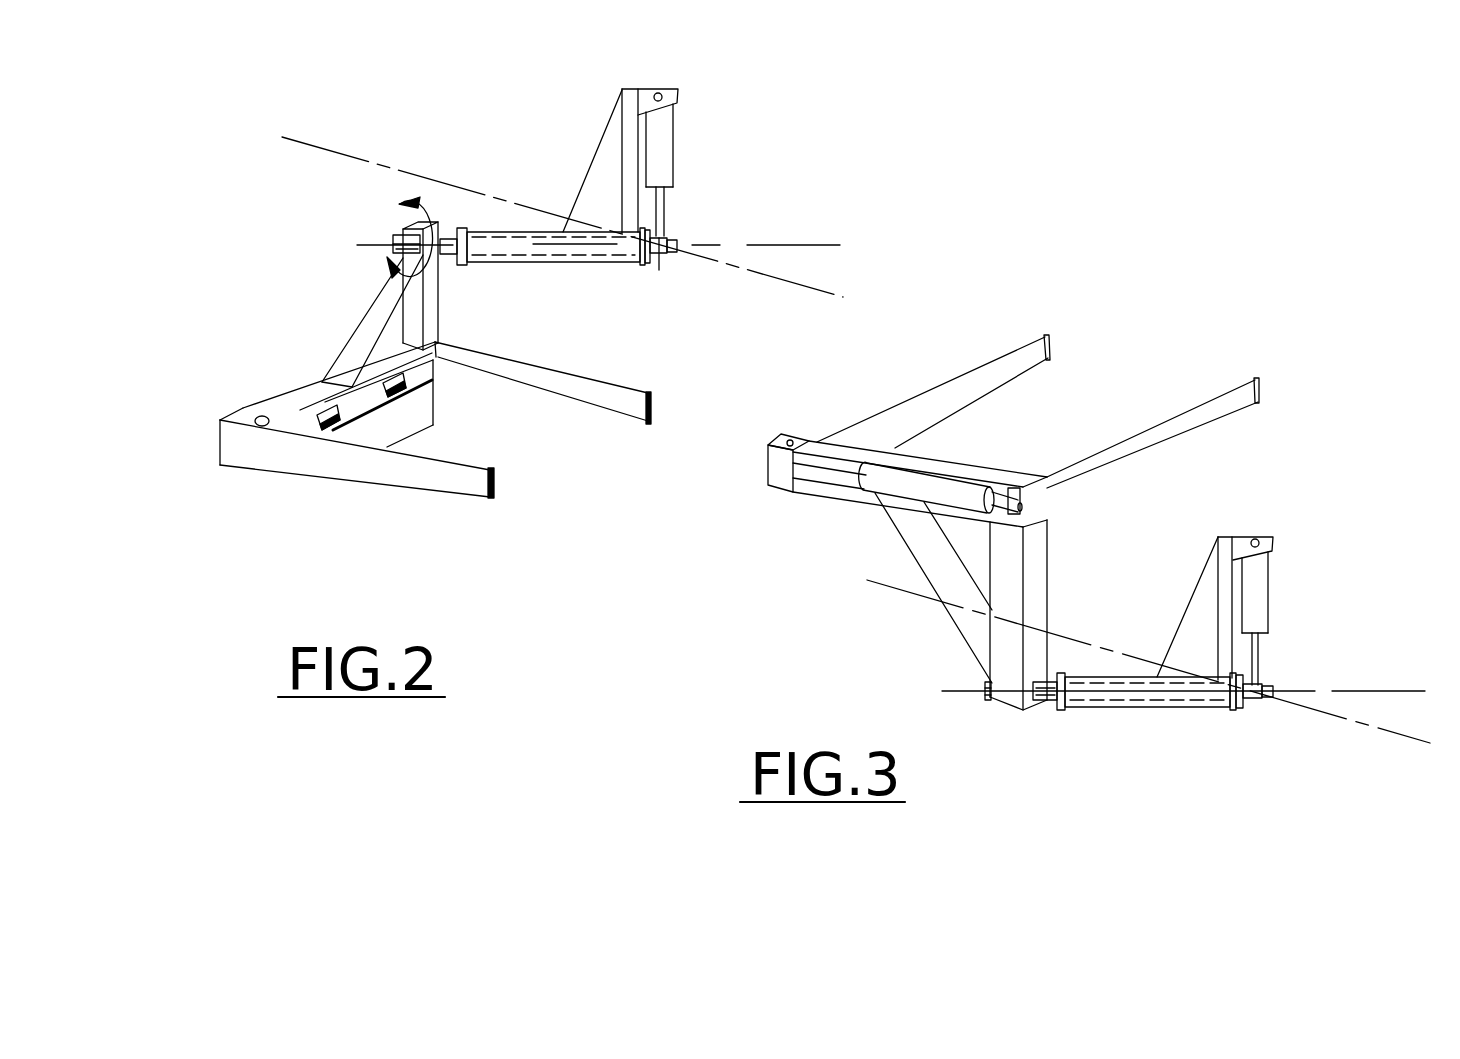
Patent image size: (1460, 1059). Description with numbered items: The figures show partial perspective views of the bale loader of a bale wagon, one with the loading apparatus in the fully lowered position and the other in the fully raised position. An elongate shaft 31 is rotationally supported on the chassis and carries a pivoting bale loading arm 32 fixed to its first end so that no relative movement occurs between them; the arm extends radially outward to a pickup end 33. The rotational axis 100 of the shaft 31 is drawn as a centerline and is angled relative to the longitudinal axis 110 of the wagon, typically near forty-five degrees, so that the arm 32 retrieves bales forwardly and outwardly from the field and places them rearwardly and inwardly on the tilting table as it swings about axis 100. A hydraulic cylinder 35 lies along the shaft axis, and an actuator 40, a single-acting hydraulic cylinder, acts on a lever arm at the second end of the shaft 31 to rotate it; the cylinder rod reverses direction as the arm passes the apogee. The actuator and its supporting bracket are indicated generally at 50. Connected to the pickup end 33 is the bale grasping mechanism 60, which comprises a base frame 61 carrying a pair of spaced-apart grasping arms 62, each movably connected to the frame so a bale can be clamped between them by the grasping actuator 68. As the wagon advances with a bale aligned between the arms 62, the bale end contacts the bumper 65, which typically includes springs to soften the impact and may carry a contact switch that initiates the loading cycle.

In FIG. 2, the elongate shaft 31 is at (392, 241).
In FIG. 3, the elongate shaft 31 is at (1053, 700).
In FIG. 2, the bale loading arm 32 is at (431, 295).
In FIG. 3, the bale loading arm 32 is at (1003, 610).
In FIG. 2, the pickup end 33 is at (455, 336).
In FIG. 2, the hydraulic cylinder 35 is at (558, 249).
In FIG. 3, the hydraulic cylinder 35 is at (1105, 695).
In FIG. 2, the actuator 40 is at (673, 135).
In FIG. 3, the actuator 40 is at (1260, 590).
In FIG. 2, the drive unit 50 is at (740, 148).
In FIG. 3, the drive unit 50 is at (1316, 601).
In FIG. 2, the bale grasping mechanism 60 is at (376, 448).
In FIG. 2, the base frame 61 is at (307, 398).
In FIG. 3, the base frame 61 is at (828, 452).
In FIG. 2, the grasping arms 62 is at (570, 402).
In FIG. 3, the grasping arms 62 is at (983, 382).
In FIG. 2, the bumper 65 is at (402, 422).
In FIG. 3, the grasping actuator 68 is at (883, 483).
In FIG. 2, the rotational axis 100 is at (807, 243).
In FIG. 3, the rotational axis 100 is at (1350, 690).
In FIG. 2, the longitudinal axis 110 is at (400, 168).
In FIG. 3, the longitudinal axis 110 is at (1383, 730).